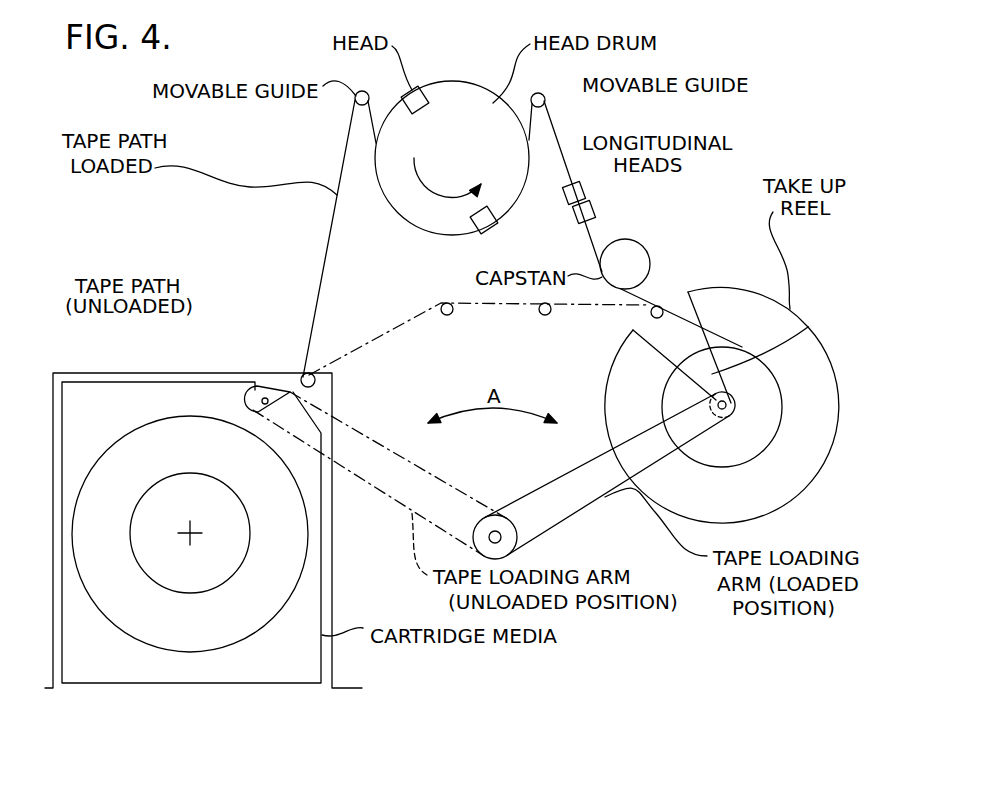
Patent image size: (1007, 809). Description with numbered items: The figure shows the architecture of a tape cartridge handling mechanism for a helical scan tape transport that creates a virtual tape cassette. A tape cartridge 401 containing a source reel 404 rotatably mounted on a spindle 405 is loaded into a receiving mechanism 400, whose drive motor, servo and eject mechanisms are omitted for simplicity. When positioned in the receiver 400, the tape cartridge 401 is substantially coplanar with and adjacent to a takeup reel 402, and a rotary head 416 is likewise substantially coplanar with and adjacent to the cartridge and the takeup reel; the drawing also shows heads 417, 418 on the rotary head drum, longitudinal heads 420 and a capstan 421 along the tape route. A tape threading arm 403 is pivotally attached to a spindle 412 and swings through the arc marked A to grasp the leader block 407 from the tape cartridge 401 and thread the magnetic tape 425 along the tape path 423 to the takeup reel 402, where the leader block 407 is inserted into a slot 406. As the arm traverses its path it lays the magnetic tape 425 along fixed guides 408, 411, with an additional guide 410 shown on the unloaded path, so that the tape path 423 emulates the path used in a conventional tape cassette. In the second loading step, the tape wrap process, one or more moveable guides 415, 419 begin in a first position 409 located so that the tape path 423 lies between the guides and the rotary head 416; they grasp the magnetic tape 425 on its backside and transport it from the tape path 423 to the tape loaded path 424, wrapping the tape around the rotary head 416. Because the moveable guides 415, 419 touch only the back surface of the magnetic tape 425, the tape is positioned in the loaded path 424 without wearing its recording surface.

The receiving mechanism 400 is at (53, 627).
The tape cartridge 401 is at (322, 593).
The takeup reel 402 is at (770, 510).
The tape threading arm 403 is at (550, 530).
The source reel 404 is at (157, 420).
The spindle 405 is at (205, 500).
The slot 406 is at (806, 325).
The leader block 407 is at (738, 416).
The fixed guide 408 is at (317, 387).
The first position of moveable guides 409 is at (448, 316).
The fixed tape guide 410 is at (545, 316).
The fixed guide 411 is at (650, 313).
The spindle 412 is at (496, 531).
The moveable guide 415 is at (351, 122).
The rotary head 416 is at (467, 87).
The head 417 is at (446, 128).
The head 418 is at (483, 229).
The moveable guide 419 is at (546, 101).
The longitudinal heads 420 is at (590, 203).
The capstan 421 is at (650, 276).
The tape path 423 is at (345, 352).
The tape loaded path 424 is at (325, 262).
The magnetic tape 425 is at (712, 375).